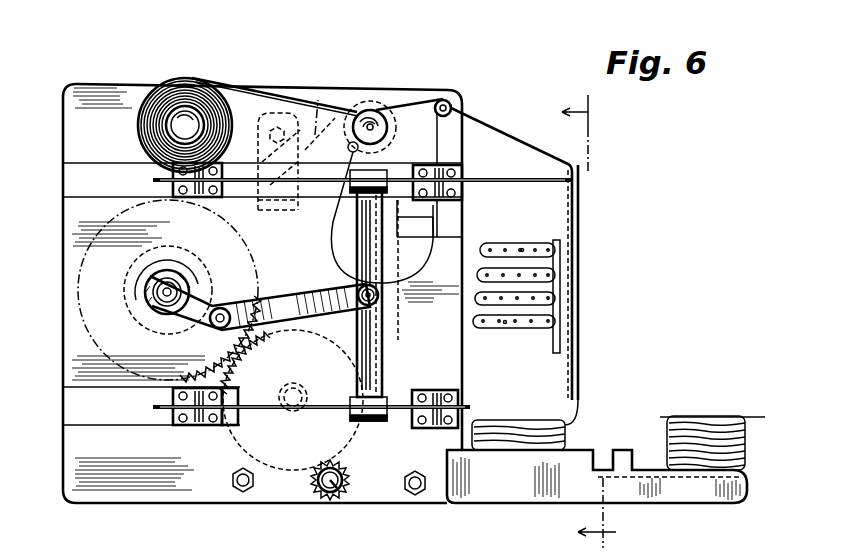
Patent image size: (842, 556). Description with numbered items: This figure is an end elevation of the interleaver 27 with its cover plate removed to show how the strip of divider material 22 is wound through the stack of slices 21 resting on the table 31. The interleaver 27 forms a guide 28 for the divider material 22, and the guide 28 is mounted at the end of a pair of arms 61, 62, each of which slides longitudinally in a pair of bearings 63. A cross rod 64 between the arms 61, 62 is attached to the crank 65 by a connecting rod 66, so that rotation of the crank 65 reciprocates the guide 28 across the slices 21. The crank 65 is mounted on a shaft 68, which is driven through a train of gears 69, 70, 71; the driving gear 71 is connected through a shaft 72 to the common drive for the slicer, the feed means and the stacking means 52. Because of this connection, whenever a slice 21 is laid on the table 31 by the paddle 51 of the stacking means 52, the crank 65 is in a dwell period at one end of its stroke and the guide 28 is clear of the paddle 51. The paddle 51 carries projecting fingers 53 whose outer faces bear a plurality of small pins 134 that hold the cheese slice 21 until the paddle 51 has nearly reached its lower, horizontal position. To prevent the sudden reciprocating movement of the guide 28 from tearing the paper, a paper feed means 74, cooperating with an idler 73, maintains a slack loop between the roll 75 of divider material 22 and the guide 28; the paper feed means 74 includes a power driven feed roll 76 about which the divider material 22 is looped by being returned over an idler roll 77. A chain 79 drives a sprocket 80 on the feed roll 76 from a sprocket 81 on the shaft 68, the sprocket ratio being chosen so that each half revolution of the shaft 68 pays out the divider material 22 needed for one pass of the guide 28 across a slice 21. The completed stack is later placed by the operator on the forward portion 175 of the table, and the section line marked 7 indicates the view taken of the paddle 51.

The section line 7- 7 is at (586, 323).
The slice 21 is at (510, 420).
The divider material 22 is at (292, 92).
The interleaver 27 is at (467, 84).
The guide 28 is at (580, 222).
The table 31 is at (683, 497).
The paddle 51 is at (494, 242).
The stacking means 52 is at (574, 316).
The fingers 53 is at (484, 330).
The arm 61 is at (507, 185).
The arm 62 is at (472, 405).
The bearings 63 is at (445, 163).
The cross rod 64 is at (380, 356).
The crank 65 is at (172, 290).
The connecting rod 66 is at (270, 296).
The shaft 68 is at (148, 328).
The gear 69 is at (80, 318).
The gear 70 is at (277, 470).
The driving gear 71 is at (322, 498).
The shaft 72 is at (336, 488).
The idler 73 is at (452, 110).
The paper feed means 74 is at (385, 112).
The roll 75 is at (173, 76).
The feed roll 76 is at (378, 128).
The idler roll 77 is at (349, 151).
The chain 79 is at (318, 100).
The sprocket 80 is at (372, 100).
The sprocket 81 is at (135, 258).
The pins 134 is at (522, 250).
The forward portion 175 is at (746, 473).